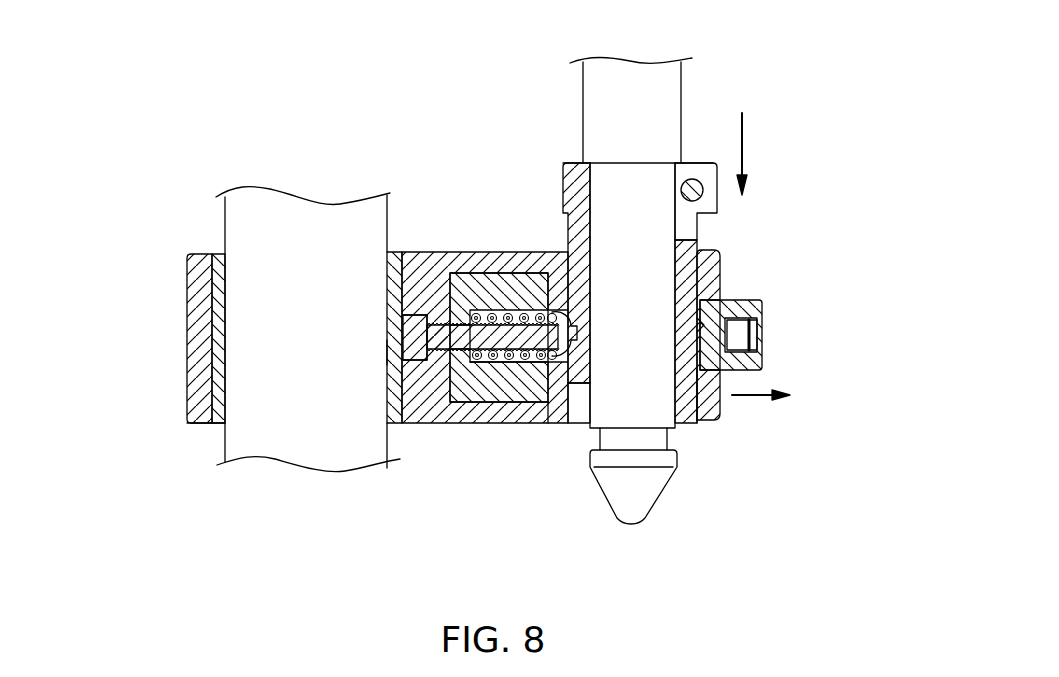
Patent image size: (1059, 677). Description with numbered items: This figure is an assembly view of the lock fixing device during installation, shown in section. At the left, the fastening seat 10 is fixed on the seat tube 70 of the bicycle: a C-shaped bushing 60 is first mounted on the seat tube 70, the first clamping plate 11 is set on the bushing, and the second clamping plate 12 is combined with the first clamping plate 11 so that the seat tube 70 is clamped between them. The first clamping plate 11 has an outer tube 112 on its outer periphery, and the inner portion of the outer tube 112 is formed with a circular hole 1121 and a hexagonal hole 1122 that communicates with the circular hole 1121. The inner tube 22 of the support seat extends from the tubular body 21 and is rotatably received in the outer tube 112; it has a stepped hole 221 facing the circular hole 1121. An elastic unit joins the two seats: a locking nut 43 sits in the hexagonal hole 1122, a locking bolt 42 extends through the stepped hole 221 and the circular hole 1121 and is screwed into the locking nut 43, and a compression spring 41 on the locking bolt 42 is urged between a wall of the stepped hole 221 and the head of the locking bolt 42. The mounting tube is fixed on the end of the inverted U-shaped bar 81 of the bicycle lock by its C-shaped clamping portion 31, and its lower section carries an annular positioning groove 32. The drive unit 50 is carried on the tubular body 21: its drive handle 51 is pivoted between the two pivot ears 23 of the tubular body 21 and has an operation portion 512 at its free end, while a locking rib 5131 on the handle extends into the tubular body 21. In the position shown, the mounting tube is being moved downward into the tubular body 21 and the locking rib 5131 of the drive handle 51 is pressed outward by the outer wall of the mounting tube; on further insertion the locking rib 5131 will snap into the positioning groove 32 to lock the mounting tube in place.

The fastening seat 10 is at (165, 345).
The first clamping plate 11 is at (457, 358).
The second clamping plate 12 is at (200, 252).
The tubular body 21 is at (556, 262).
The inner tube 22 is at (499, 407).
The pivot ears 23 is at (713, 256).
The C-shaped clamping portion 31 is at (723, 222).
The annular positioning groove 32 is at (700, 324).
The compression spring 41 is at (514, 316).
The locking bolt 42 is at (486, 241).
The locking nut 43 is at (412, 313).
The drive unit 50 is at (772, 405).
The drive handle 51 is at (757, 360).
The C-shaped bushing 60 is at (213, 440).
The seat tube 70 is at (304, 190).
The inverted U-shaped bar 81 is at (593, 88).
The outer tube 112 is at (537, 421).
The stepped hole 221 is at (522, 426).
The operation portion 512 is at (762, 330).
The circular hole 1121 is at (434, 424).
The hexagonal hole 1122 is at (388, 356).
The locking rib 5131 is at (697, 376).